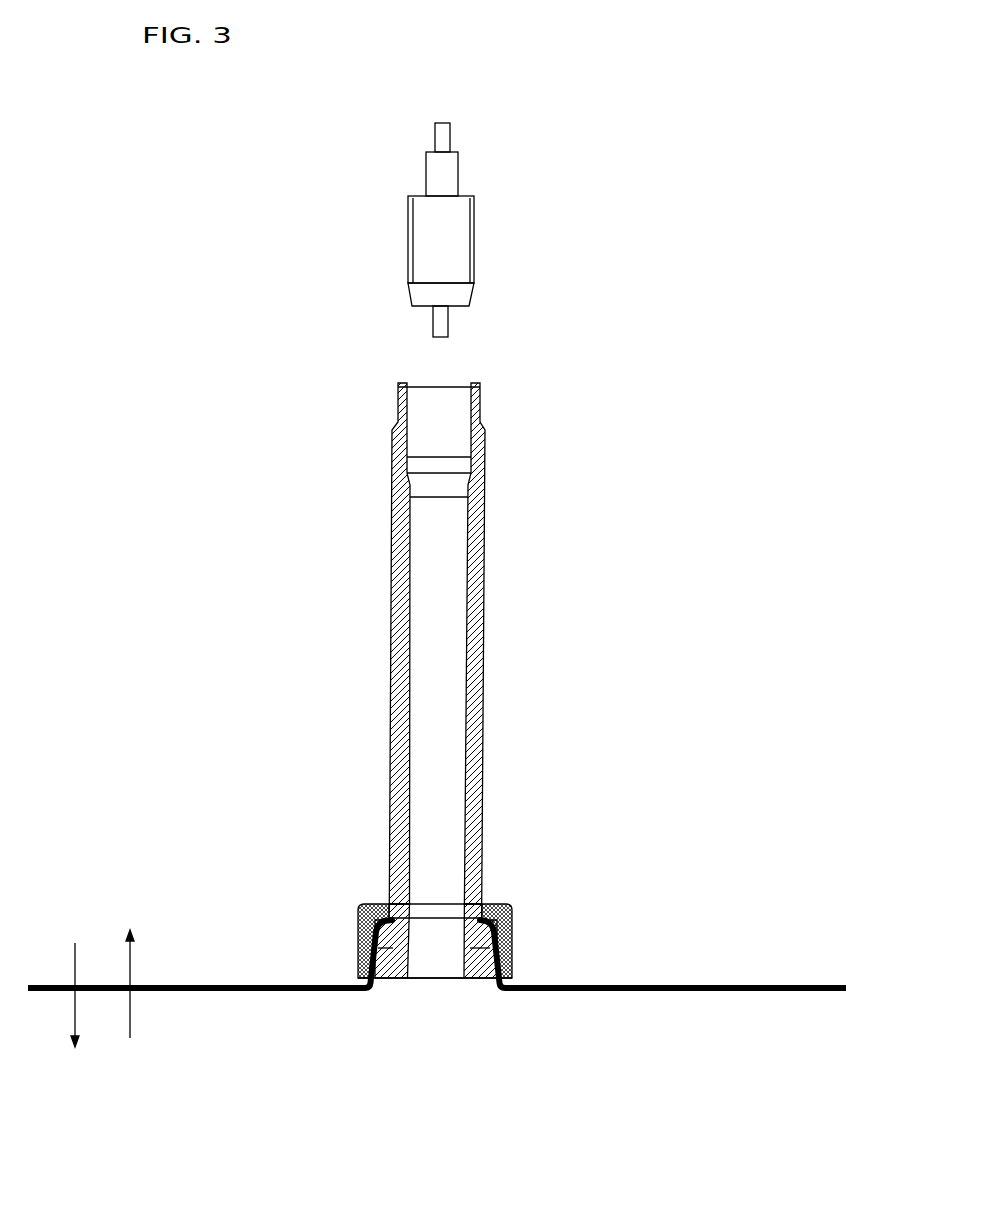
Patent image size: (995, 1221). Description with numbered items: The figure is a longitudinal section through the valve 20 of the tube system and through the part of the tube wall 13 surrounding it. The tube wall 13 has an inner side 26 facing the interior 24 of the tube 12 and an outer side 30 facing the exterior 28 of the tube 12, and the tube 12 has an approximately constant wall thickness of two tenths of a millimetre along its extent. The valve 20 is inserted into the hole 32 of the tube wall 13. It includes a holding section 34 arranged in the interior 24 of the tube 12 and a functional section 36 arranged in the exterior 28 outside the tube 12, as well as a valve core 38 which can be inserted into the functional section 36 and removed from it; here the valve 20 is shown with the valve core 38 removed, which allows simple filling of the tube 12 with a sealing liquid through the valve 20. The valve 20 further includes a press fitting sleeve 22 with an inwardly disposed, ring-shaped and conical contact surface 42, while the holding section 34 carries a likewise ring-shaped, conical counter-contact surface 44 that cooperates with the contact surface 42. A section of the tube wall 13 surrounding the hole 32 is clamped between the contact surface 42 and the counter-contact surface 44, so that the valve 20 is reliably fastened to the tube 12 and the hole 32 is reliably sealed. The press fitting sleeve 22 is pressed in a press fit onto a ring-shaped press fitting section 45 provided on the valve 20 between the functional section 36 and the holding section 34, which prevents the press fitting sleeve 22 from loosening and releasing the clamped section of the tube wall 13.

The tube 12 is at (582, 966).
The tube wall 13 is at (540, 992).
The valve 20 is at (259, 284).
The press fitting sleeve 22 is at (512, 913).
The interior 24 is at (77, 980).
The inner side 26 is at (341, 993).
The exterior 28 is at (132, 1003).
The outer side 30 is at (317, 986).
The hole 32 is at (437, 902).
The holding section 34 is at (388, 980).
The functional section 36 is at (480, 655).
The valve core 38 is at (475, 240).
The contact surface 42 is at (373, 953).
The counter-contact surface 44 is at (488, 960).
The press fitting section 45 is at (388, 902).